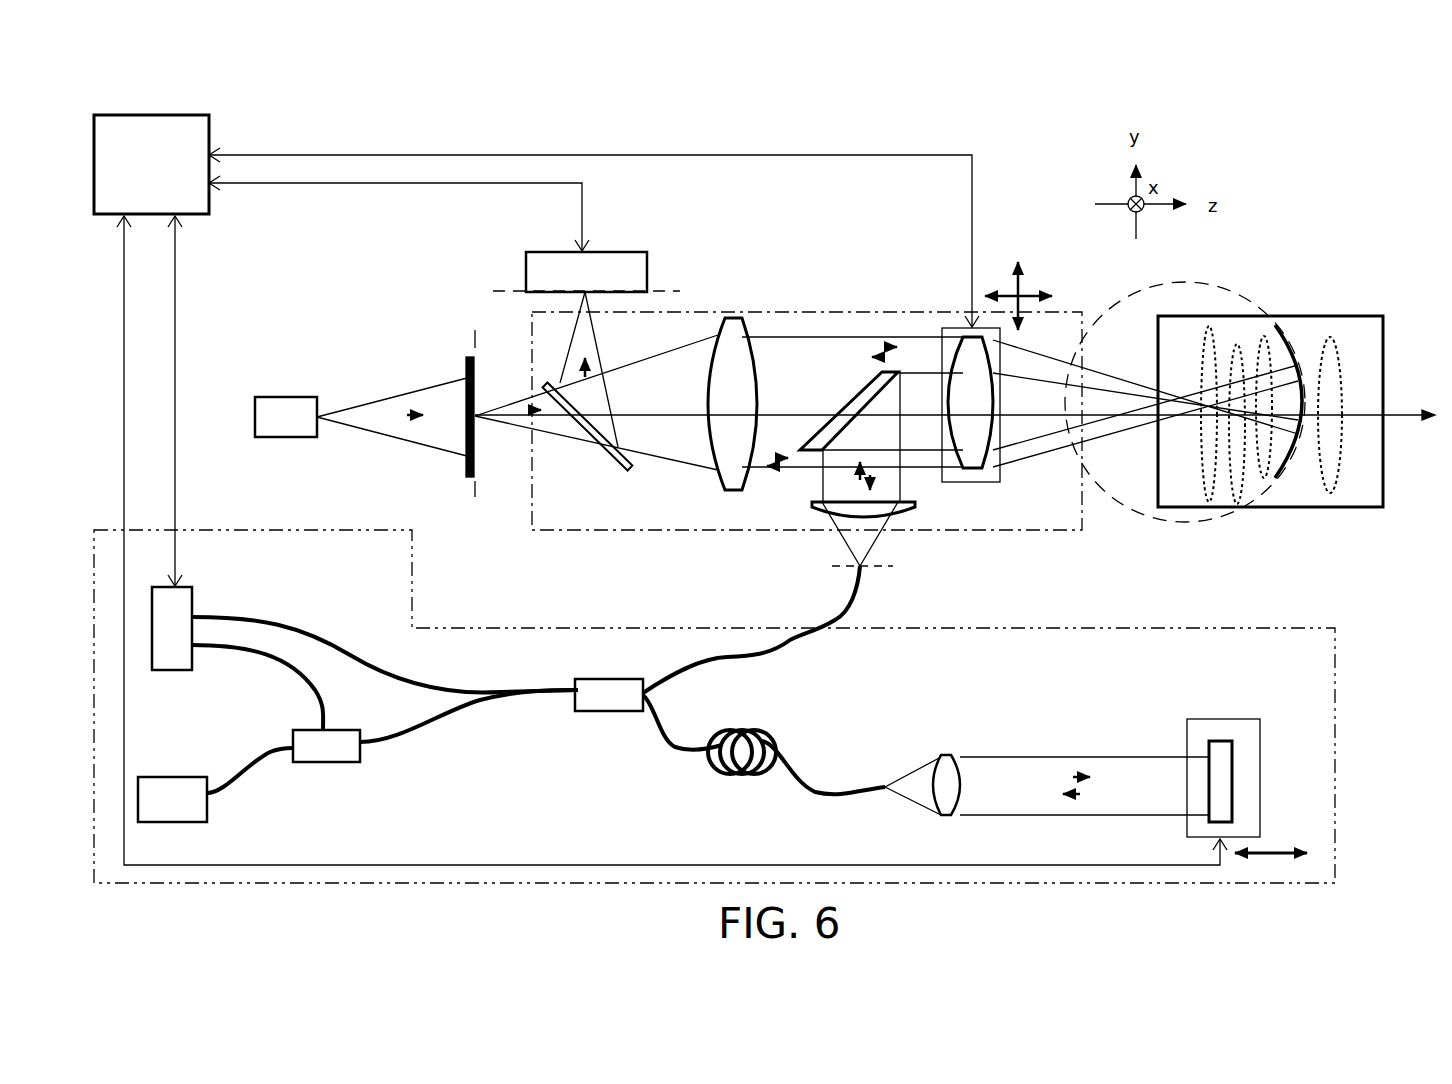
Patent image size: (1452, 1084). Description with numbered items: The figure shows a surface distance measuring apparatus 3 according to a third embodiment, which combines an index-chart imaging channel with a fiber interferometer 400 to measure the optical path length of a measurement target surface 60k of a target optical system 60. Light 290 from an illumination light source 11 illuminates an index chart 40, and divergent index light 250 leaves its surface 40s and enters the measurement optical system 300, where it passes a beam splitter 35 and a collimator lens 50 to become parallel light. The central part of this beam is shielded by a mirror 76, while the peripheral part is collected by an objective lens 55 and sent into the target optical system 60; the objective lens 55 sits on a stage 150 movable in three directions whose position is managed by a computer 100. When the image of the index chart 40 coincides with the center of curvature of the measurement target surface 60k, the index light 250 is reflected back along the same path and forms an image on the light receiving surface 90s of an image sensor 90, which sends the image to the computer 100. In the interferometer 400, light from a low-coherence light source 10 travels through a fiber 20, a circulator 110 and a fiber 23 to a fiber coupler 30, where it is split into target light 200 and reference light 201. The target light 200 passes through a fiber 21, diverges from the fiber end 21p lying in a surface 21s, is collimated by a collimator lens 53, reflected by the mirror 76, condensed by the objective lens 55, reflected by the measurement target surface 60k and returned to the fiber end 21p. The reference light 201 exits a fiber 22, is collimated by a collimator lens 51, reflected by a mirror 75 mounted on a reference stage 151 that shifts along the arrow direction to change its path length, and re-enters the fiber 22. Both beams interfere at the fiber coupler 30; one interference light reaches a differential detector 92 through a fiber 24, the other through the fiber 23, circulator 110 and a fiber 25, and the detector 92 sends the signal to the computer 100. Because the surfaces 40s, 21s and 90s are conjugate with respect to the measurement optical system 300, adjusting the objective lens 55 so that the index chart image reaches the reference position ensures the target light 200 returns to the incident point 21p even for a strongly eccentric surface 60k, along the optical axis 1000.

The surface distance measuring apparatus 3 is at (809, 84).
The low-coherence light source 10 is at (178, 787).
The illumination light source 11 is at (288, 408).
The fiber 20 is at (233, 795).
The fiber 21 is at (735, 658).
The fiber end 21p is at (865, 555).
The surface including the fiber end 21s is at (880, 568).
The fiber 22 is at (670, 728).
The fiber 23 is at (470, 720).
The fiber 24 is at (318, 648).
The fiber 25 is at (252, 657).
The fiber coupler 30 is at (598, 692).
The beam splitter 35 is at (633, 470).
The index chart 40 is at (468, 352).
The surface of the index chart 40s is at (474, 492).
The collimator lens 50 is at (733, 492).
The collimator lens 51 is at (947, 753).
The collimator lens 53 is at (814, 510).
The objective lens 55 is at (968, 360).
The target optical system 60 is at (1363, 510).
The measurement target surface 60k is at (1285, 335).
The mirror 75 is at (1220, 740).
The mirror 76 is at (860, 404).
The image sensor 90 is at (648, 272).
The light receiving surface 90s is at (496, 291).
The differential detector 92 is at (188, 592).
The computer 100 is at (210, 216).
The circulator 110 is at (326, 748).
The stage 150 is at (976, 356).
The reference stage 151 is at (1261, 760).
The target light 200 is at (1022, 413).
The reference light 201 is at (1066, 792).
The index light 250 is at (525, 410).
The light 290 is at (415, 422).
The measurement optical system 300 is at (1066, 312).
The interferometer 400 is at (490, 625).
The optical axis 1000 is at (1418, 413).